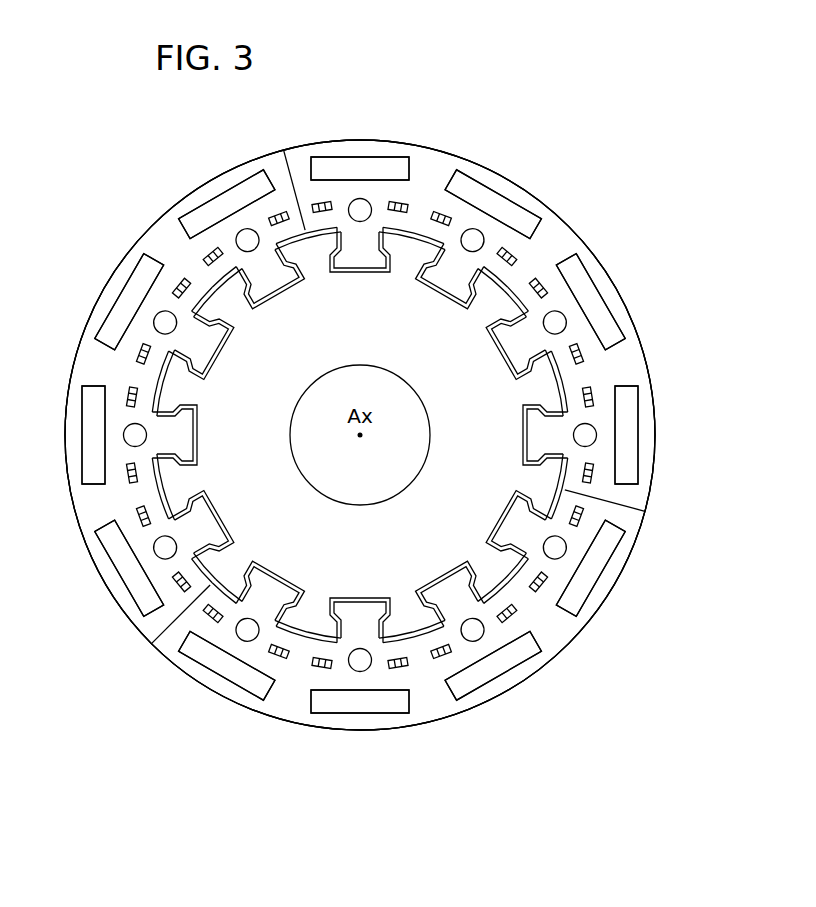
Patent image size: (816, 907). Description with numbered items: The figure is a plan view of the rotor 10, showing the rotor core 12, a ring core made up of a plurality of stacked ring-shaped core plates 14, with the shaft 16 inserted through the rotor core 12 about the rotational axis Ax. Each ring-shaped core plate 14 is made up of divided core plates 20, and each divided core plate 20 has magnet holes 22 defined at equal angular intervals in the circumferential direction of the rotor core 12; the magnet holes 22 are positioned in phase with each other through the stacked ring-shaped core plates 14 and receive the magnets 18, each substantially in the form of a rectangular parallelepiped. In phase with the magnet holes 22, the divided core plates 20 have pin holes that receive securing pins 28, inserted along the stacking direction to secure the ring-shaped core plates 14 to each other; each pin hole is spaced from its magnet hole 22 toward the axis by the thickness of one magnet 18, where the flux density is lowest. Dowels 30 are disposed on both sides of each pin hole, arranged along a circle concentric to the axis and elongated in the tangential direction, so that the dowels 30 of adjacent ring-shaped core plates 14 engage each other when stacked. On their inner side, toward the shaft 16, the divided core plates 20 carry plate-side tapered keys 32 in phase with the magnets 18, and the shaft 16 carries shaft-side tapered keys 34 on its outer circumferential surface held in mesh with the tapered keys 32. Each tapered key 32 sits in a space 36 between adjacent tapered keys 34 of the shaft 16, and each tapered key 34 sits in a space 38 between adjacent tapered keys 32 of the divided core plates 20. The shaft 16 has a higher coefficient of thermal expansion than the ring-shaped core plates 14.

The rotor 10 is at (527, 106).
The rotor core 12 is at (590, 243).
The ring-shaped core plates 14 is at (566, 656).
The shaft 16 is at (409, 231).
The magnets 18 is at (249, 193).
The divided core plates 20 is at (158, 240).
The magnet holes 22 is at (188, 221).
The securing pins 28 is at (243, 236).
The dowels 30 is at (277, 214).
The tapered keys 32 is at (540, 352).
The tapered keys 34 is at (500, 304).
The space 36 is at (442, 292).
The space 38 is at (508, 284).